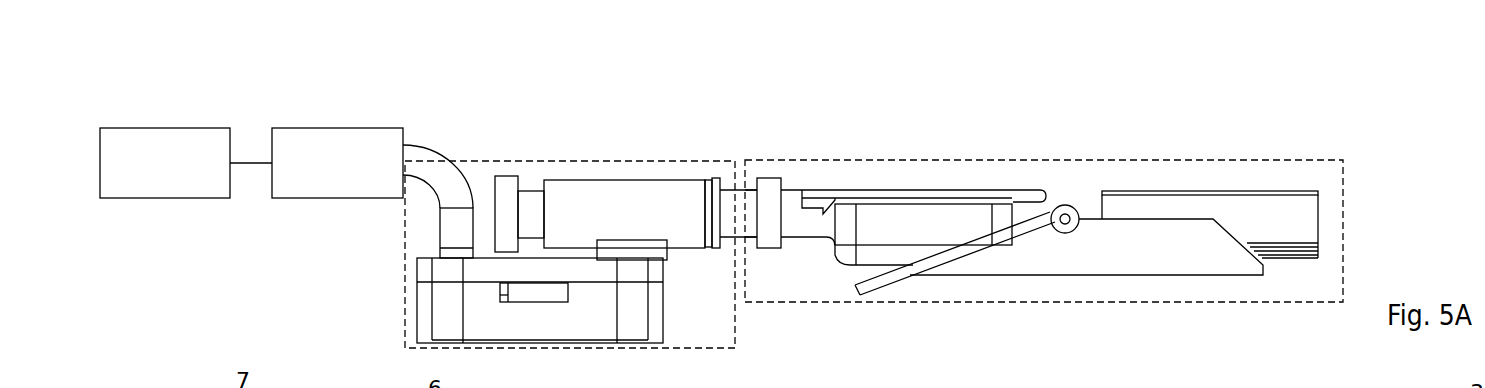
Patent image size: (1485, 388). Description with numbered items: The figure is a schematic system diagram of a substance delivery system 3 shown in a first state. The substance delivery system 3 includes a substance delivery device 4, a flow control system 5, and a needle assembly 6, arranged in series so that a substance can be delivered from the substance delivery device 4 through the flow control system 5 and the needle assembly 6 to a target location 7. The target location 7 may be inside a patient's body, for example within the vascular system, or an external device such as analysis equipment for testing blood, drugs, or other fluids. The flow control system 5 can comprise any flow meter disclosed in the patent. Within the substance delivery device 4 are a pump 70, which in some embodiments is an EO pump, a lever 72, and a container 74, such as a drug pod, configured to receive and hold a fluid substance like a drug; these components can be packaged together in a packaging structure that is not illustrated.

The substance delivery system 3 is at (1345, 61).
The substance delivery device 4 is at (1092, 229).
The flow control system 5 is at (593, 161).
The needle assembly 6 is at (345, 128).
The target location 7 is at (154, 128).
The pump 70 is at (1293, 218).
The lever 72 is at (1157, 257).
The container 74 is at (875, 218).